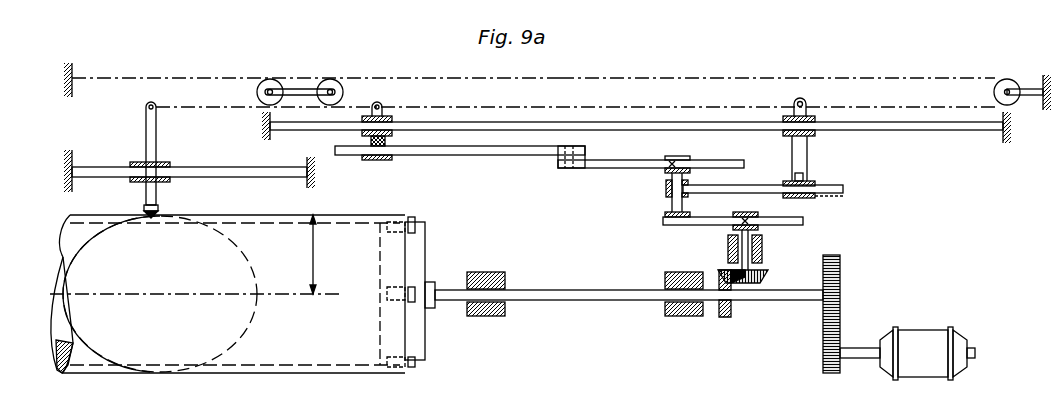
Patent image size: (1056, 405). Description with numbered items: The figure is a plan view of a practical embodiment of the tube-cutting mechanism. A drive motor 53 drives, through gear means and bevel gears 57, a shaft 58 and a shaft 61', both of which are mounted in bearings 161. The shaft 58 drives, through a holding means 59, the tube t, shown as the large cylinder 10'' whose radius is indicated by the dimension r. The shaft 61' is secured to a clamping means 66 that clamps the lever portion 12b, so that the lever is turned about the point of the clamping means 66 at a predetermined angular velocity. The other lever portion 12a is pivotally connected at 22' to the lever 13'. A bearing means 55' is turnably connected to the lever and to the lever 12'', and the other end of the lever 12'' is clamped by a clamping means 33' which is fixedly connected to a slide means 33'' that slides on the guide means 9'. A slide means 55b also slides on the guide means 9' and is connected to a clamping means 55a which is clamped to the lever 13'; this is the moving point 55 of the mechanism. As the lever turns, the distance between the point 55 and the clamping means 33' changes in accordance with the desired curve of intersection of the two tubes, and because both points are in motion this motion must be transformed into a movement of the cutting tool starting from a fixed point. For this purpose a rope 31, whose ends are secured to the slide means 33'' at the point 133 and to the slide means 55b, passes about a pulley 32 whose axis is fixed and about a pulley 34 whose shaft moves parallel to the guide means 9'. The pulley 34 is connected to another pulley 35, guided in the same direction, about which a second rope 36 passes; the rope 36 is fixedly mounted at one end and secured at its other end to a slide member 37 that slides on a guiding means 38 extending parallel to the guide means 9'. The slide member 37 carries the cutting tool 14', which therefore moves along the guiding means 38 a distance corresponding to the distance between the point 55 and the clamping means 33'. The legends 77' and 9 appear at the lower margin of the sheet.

The second rope 36 is at (178, 77).
The rope 31 is at (732, 79).
The third pulley 35 is at (257, 91).
The pulley 34 is at (343, 90).
The pulley 32 is at (994, 90).
The cutting tool 14' is at (171, 160).
The slide member 37 is at (163, 164).
The guiding means 38 is at (248, 175).
The guide means 9' is at (636, 111).
The point 55 is at (398, 84).
The slide means 55b is at (393, 117).
The clamping means 55a is at (392, 157).
The lever 13' is at (460, 165).
The pivotal connection 22' is at (588, 150).
The lever portion 12a is at (605, 167).
The slide means 33'' is at (785, 132).
The point 133 is at (802, 101).
The clamping means 33' is at (813, 173).
The lever 12'' is at (763, 199).
The bearing means 55' is at (657, 186).
The lever portion 12b is at (694, 226).
The clamping means 66 is at (757, 215).
The bearings 161 is at (762, 256).
The shaft 61' is at (762, 267).
The bevel gears 57 is at (722, 316).
The shaft 58 is at (575, 301).
The drive motor 53 is at (915, 338).
The roll 10'' is at (227, 310).
The radius dimension r is at (318, 254).
The tube t is at (356, 373).
The holding means 59 is at (425, 343).
The reference 77' is at (503, 396).
The reference 9 is at (771, 401).